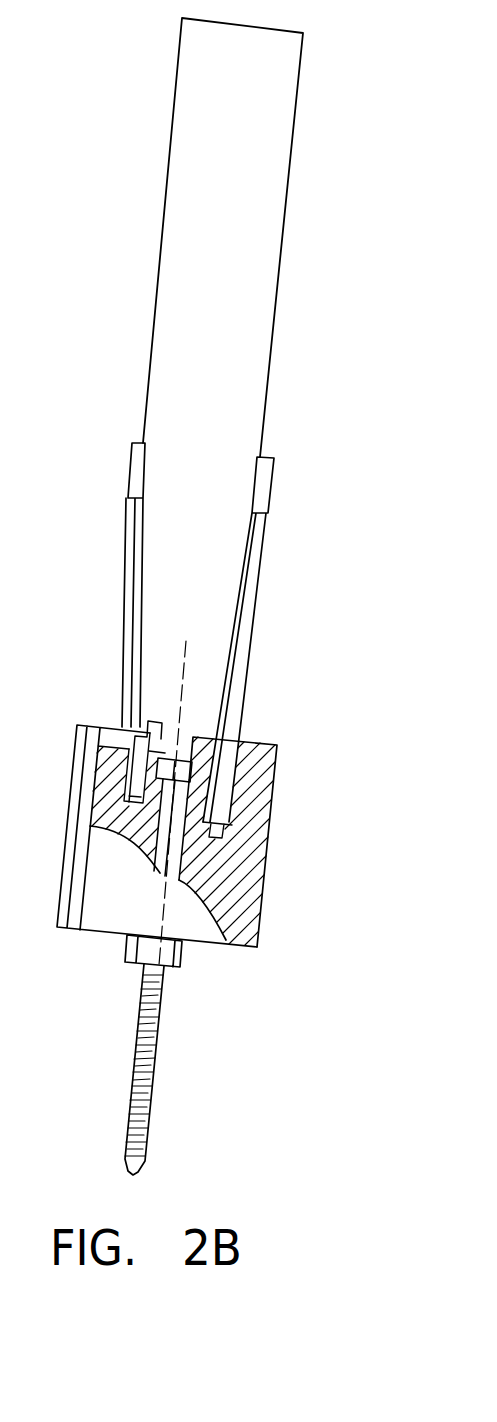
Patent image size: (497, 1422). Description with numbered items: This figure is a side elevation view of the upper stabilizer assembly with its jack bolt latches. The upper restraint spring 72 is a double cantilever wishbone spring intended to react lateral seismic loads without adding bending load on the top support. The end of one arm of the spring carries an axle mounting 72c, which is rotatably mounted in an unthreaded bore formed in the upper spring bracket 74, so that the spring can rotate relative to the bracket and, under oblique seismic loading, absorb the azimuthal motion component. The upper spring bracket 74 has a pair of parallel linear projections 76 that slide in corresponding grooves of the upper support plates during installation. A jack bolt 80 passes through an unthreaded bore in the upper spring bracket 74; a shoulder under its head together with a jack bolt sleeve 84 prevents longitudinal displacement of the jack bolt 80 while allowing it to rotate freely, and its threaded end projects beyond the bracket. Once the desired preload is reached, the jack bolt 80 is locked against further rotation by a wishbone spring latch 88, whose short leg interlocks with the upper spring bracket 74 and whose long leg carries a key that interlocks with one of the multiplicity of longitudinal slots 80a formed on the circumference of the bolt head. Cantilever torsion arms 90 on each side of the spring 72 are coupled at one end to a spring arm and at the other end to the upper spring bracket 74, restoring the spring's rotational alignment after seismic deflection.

The upper restraint spring 72 is at (251, 137).
The axle mounting 72c is at (180, 865).
The upper spring bracket 74 is at (268, 833).
The parallel linear projections 76 is at (85, 797).
The jack bolt 80 is at (132, 1038).
The longitudinal slots 80a is at (163, 765).
The jack bolt sleeve 84 is at (183, 962).
The wishbone spring latch 88 is at (160, 712).
The cantilever torsion arm 90 is at (123, 563).